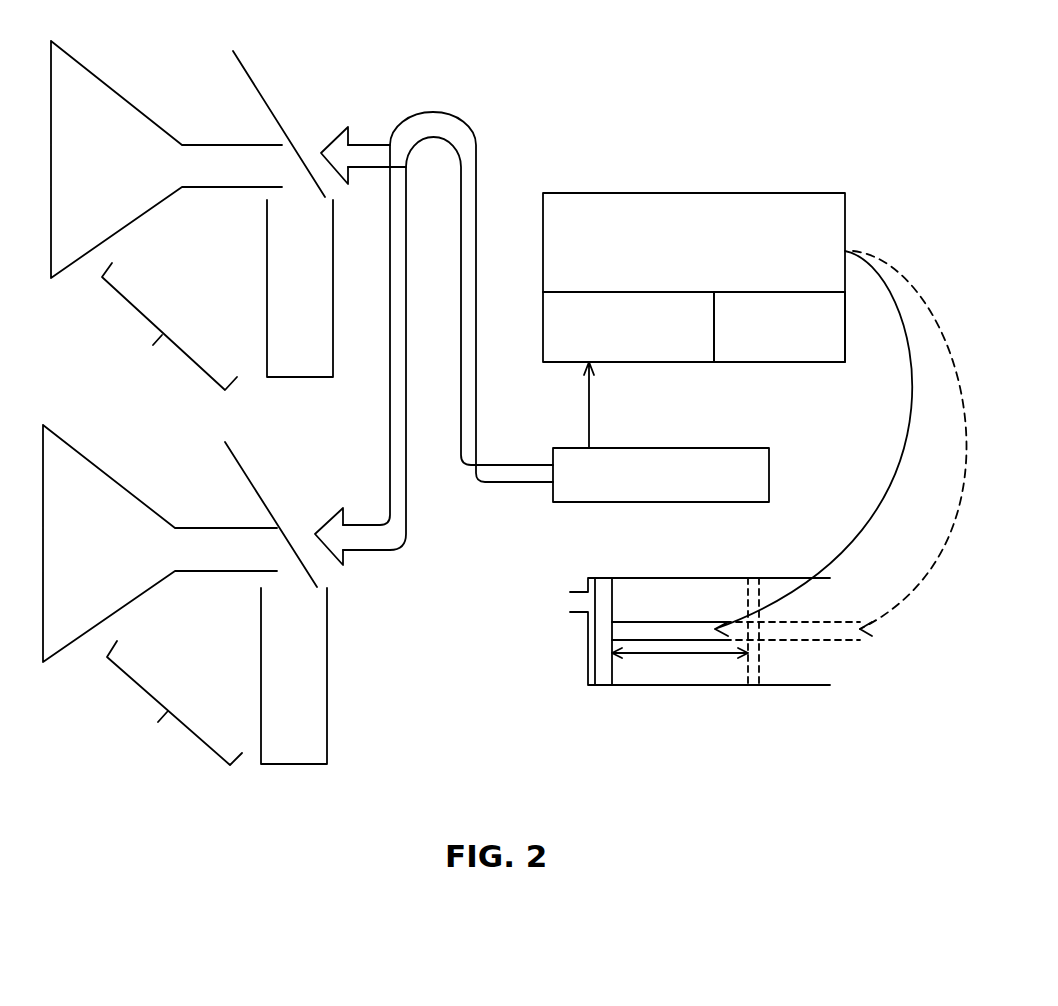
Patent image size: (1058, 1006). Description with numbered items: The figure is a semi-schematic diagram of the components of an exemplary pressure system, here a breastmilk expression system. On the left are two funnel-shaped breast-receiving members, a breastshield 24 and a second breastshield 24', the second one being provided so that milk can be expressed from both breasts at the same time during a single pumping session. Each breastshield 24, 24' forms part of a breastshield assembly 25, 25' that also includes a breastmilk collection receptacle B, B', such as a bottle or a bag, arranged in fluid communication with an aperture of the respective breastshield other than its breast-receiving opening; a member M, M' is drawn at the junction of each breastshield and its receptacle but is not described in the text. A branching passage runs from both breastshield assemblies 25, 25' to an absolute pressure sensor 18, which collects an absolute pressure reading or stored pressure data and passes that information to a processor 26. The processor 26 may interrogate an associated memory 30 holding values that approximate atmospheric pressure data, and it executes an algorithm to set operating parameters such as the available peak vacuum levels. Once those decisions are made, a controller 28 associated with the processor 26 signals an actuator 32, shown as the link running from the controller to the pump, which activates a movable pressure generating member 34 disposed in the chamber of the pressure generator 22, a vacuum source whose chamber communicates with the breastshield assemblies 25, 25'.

The absolute pressure sensor 18 is at (723, 462).
The pressure generator 22 is at (690, 686).
The breastshield 24 is at (160, 543).
The second breastshield 24' is at (166, 142).
The breastshield assembly 25 is at (174, 703).
The second breastshield assembly 25' is at (169, 326).
The processor 26 is at (653, 348).
The controller 28 is at (613, 227).
The memory 30 is at (748, 342).
The actuator 32 is at (898, 510).
The movable pressure generating member 34 is at (607, 612).
The membrane M is at (273, 514).
The second membrane M' is at (279, 124).
The breastmilk collection receptacle B is at (324, 676).
The second breastmilk collection receptacle B' is at (278, 288).